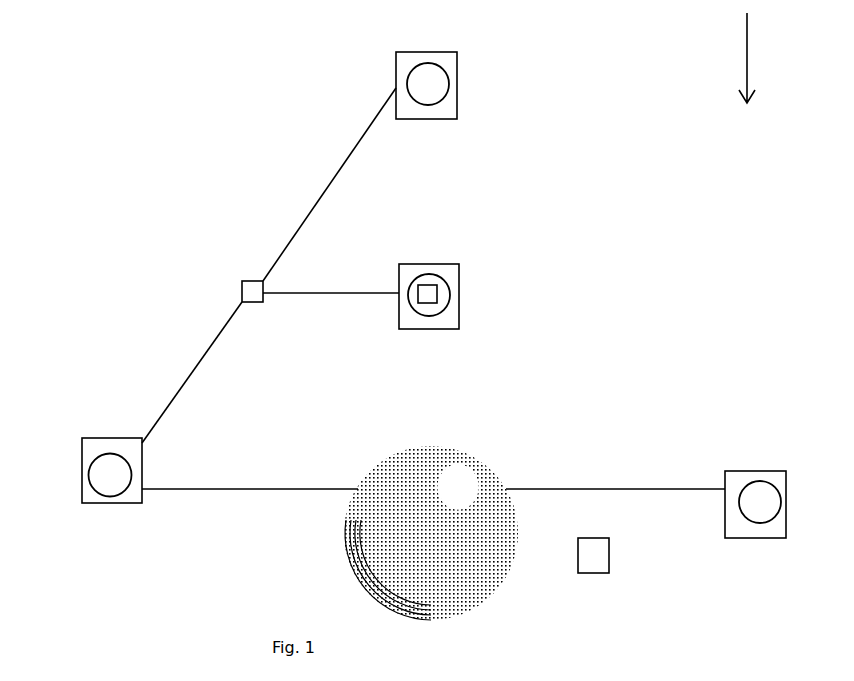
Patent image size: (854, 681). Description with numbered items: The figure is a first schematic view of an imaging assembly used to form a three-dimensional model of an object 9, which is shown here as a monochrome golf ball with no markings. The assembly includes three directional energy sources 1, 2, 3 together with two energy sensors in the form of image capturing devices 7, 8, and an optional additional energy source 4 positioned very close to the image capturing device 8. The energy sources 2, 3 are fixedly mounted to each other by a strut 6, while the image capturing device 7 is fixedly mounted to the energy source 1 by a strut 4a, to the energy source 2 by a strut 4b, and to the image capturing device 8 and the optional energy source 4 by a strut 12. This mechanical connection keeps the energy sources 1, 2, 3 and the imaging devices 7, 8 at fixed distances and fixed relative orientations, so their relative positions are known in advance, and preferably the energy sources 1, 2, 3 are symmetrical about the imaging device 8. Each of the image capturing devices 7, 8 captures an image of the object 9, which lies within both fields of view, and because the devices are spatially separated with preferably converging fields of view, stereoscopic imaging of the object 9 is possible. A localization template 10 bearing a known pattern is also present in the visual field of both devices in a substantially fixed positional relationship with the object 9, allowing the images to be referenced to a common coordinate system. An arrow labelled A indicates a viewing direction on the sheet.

The directional energy source 1 is at (396, 67).
The directional energy source 2 is at (90, 470).
The directional energy source 3 is at (781, 507).
The additional energy source 4 is at (407, 262).
The strut 4a is at (279, 252).
The strut 4b is at (206, 353).
The strut 6 is at (198, 489).
The image capturing device 7 is at (242, 285).
The image capturing device 8 is at (436, 296).
The object 9 is at (352, 563).
The localization template 10 is at (607, 573).
The strut 12 is at (338, 293).
The direction arrow A is at (721, 58).